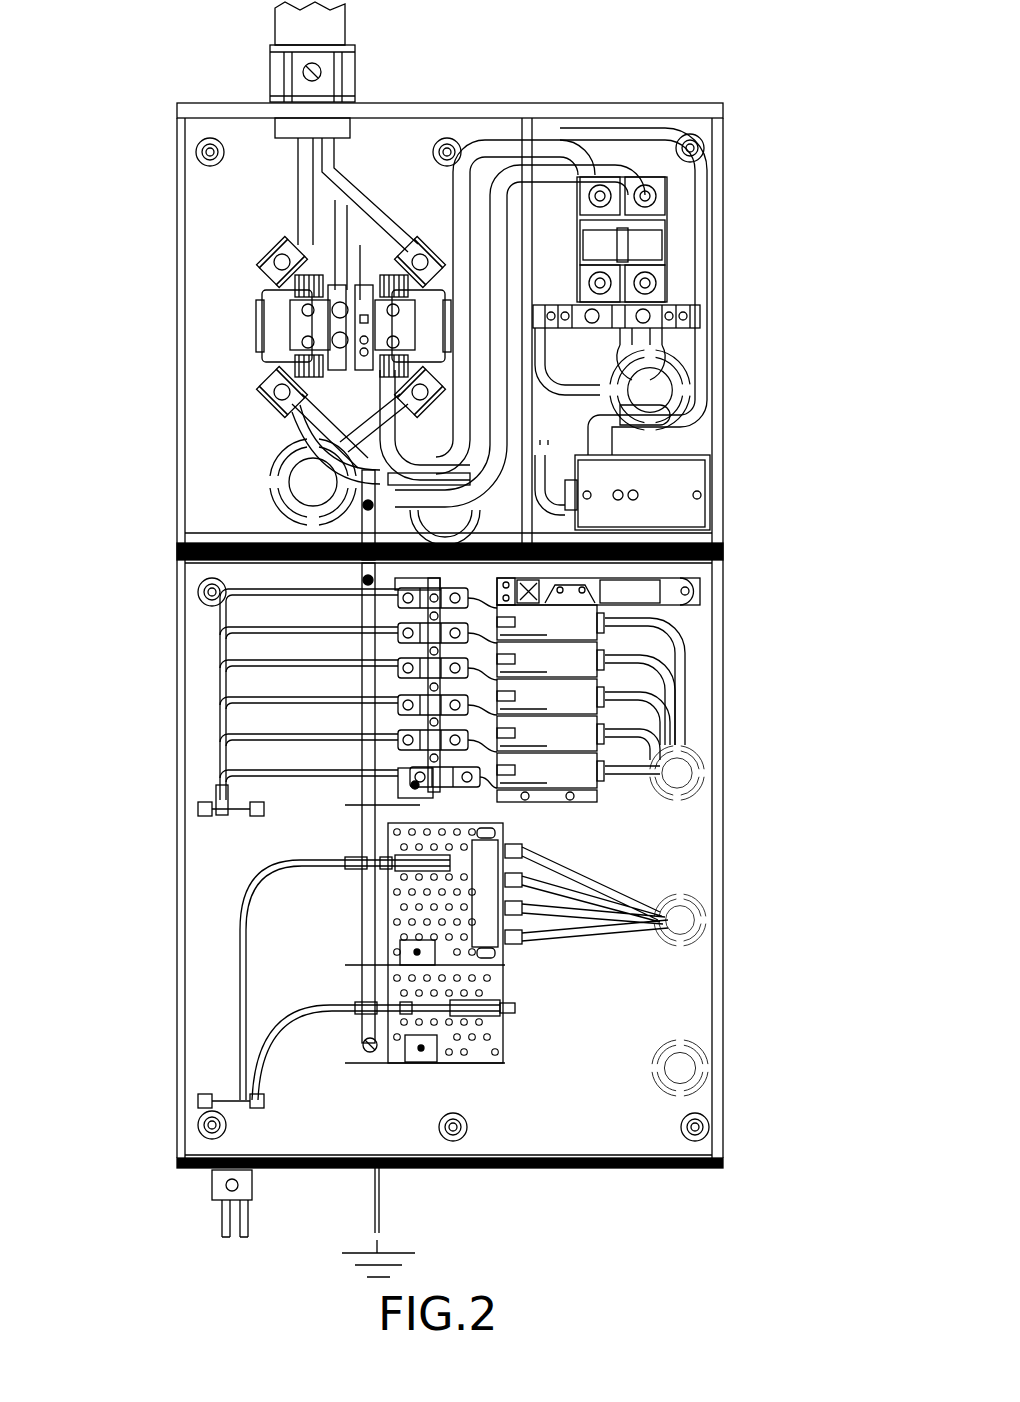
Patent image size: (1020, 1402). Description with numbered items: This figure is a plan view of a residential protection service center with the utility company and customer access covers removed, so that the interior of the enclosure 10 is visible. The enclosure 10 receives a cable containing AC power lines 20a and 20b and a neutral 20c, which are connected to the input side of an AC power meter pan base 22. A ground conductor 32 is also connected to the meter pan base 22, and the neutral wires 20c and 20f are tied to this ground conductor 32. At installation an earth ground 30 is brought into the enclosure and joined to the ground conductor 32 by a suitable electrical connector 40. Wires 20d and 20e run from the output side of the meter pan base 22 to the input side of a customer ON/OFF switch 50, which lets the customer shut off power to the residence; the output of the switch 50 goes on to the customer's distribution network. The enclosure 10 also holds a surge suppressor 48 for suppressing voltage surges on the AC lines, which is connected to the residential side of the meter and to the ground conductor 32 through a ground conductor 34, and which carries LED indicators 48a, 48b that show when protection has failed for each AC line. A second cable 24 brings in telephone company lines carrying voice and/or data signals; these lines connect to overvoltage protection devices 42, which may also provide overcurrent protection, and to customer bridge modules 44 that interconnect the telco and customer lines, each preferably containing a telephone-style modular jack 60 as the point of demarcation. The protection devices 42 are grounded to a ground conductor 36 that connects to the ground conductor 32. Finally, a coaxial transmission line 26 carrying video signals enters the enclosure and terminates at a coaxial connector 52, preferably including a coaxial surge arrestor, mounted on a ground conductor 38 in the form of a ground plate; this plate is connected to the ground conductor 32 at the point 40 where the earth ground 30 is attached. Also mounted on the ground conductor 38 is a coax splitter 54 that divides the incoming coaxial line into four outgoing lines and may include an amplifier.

The enclosure 10 is at (774, 226).
The AC power line 20a is at (303, 205).
The AC power line 20b is at (357, 198).
The neutral 20c is at (335, 243).
The wire 20d is at (300, 425).
The wire 20e is at (493, 133).
The neutral wire 20f is at (340, 443).
The AC power meter pan base 22 is at (262, 327).
The cable 24 is at (218, 1220).
The coaxial transmission line 26 is at (248, 1222).
The earth ground 30 is at (383, 1212).
The ground conductor 32 is at (370, 830).
The ground conductor 34 is at (357, 515).
The ground conductor 36 is at (395, 583).
The ground conductor 38 is at (495, 1068).
The electrical connector 40 is at (370, 1048).
The overvoltage protection devices 42 is at (395, 633).
The customer bridge modules 44 is at (578, 625).
The surge suppressor 48 is at (695, 480).
The LED indicator 48a is at (623, 492).
The LED indicator 48b is at (640, 498).
The customer ON/OFF switch 50 is at (665, 245).
The coaxial connector 52 is at (405, 868).
The coax splitter 54 is at (525, 860).
The RJ-11 type jack 60 is at (580, 583).